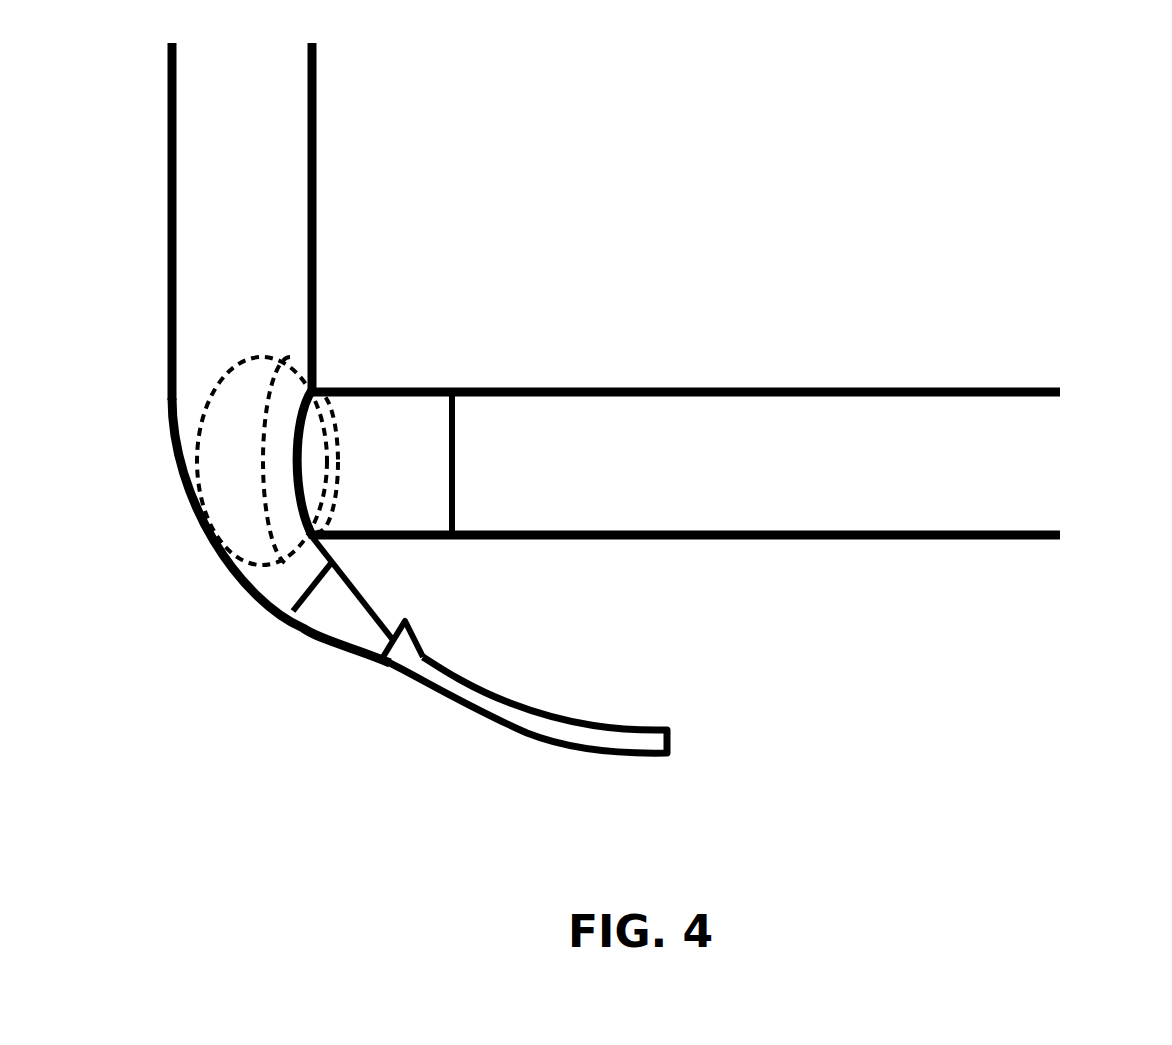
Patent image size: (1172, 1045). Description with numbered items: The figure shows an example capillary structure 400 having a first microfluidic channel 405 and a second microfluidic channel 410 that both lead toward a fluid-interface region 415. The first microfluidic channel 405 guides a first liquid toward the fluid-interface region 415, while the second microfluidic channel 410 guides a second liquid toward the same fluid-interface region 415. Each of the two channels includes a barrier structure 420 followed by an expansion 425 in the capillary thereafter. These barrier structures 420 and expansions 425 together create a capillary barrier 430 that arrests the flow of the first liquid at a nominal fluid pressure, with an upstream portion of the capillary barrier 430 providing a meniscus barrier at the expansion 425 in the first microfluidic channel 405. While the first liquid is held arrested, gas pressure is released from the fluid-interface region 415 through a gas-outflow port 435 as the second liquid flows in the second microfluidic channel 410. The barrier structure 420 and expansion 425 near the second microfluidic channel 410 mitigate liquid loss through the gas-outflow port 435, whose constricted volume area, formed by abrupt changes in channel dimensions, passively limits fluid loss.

The capillary structure 400 is at (988, 41).
The first microfluidic channel 405 is at (658, 390).
The second microfluidic channel 410 is at (170, 247).
The fluid-interface region 415 is at (245, 562).
The barrier structure 420 is at (452, 510).
The expansion 425 is at (300, 441).
The capillary barrier 430 is at (263, 462).
The gas-outflow port 435 is at (578, 747).